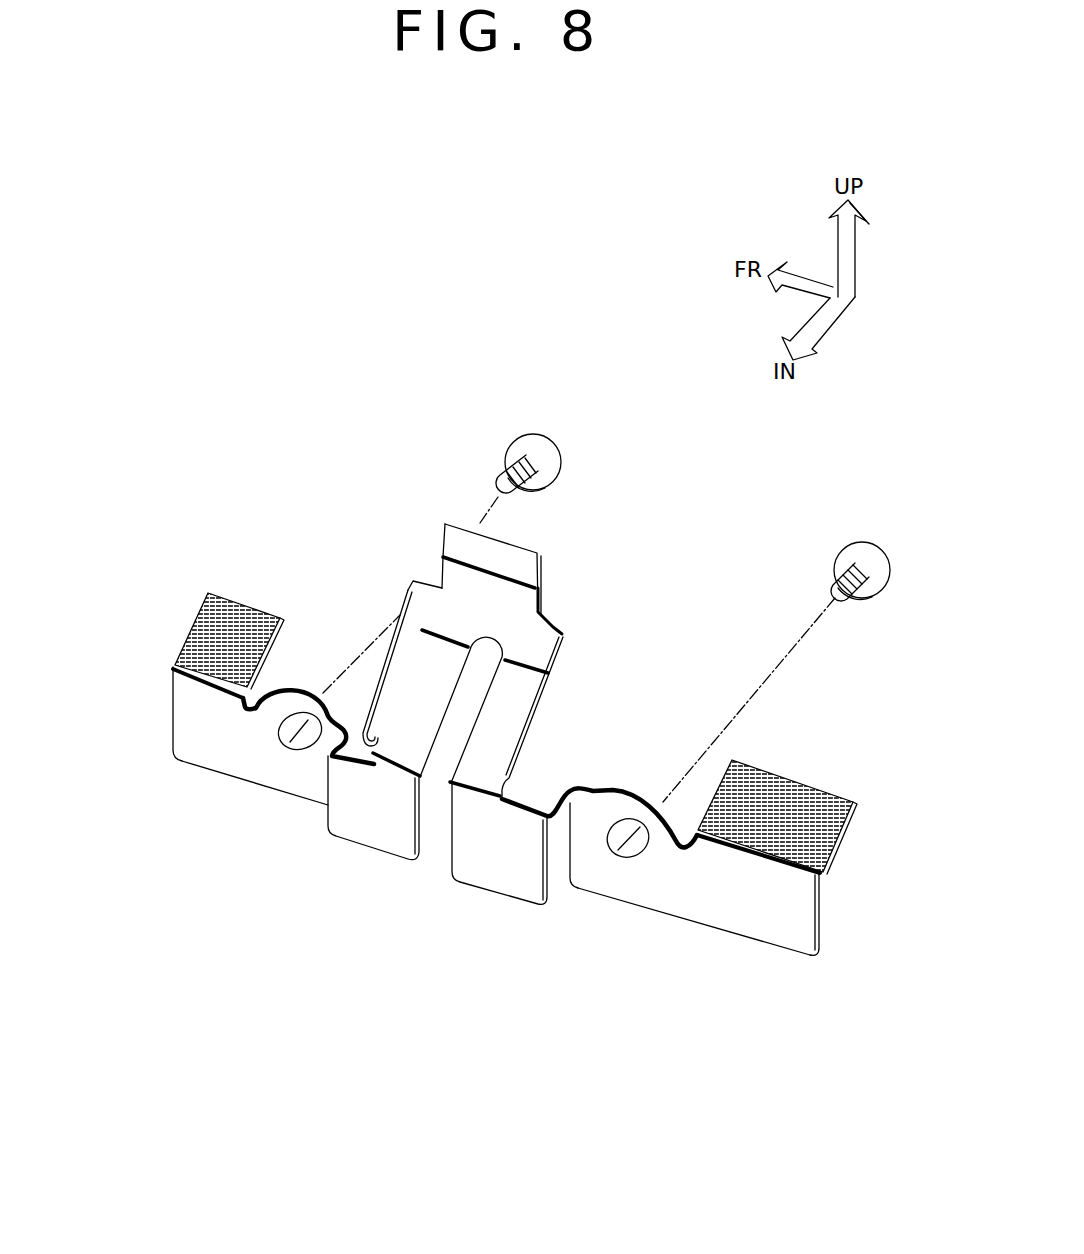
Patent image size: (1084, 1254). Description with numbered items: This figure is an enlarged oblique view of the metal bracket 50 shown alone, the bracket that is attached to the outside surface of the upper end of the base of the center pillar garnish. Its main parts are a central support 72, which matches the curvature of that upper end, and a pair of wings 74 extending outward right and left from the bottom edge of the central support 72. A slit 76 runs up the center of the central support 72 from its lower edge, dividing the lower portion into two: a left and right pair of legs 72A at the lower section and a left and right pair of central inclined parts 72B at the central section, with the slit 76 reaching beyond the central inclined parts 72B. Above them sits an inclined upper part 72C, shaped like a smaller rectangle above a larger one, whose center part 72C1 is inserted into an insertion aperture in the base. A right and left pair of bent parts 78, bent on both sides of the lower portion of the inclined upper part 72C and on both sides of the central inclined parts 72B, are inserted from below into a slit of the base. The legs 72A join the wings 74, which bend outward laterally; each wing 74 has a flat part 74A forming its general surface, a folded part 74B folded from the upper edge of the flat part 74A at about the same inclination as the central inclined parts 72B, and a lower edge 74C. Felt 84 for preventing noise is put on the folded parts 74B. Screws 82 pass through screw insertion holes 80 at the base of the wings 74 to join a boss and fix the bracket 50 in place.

The bracket 50 is at (371, 1015).
The central support 72 is at (321, 857).
The legs 72A is at (382, 840).
The central inclined parts 72B is at (400, 708).
The inclined upper part 72C is at (524, 630).
The center part 72C1 is at (508, 552).
The wings 74 is at (161, 716).
The flat parts 74A is at (188, 725).
The folded parts 74B is at (207, 612).
The lower edge of mounting plate 74C is at (232, 776).
The slit 76 is at (448, 826).
The bent parts 78 is at (400, 617).
The screw insertion holes 80 is at (297, 752).
The screws 82 is at (556, 443).
The felt 84 is at (237, 618).